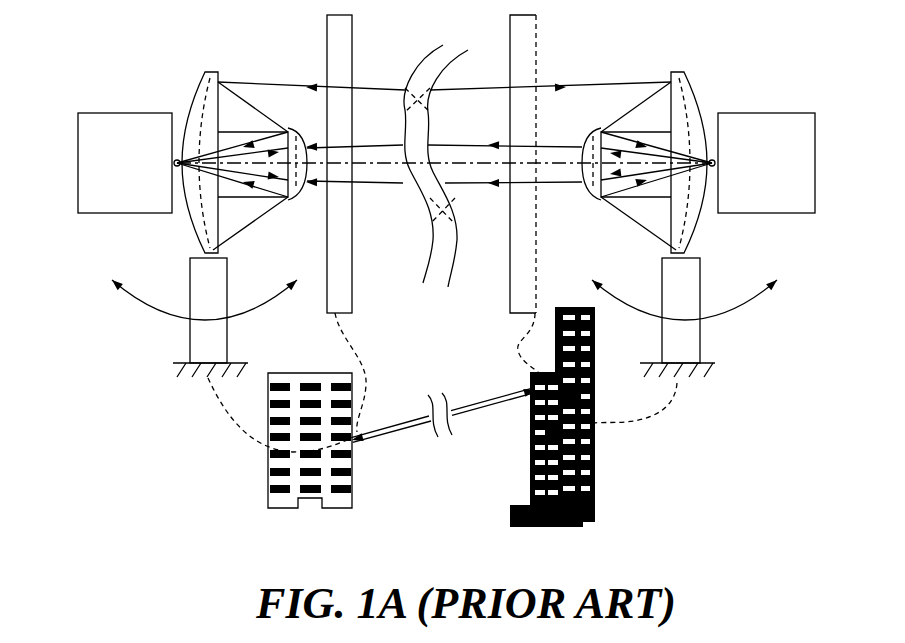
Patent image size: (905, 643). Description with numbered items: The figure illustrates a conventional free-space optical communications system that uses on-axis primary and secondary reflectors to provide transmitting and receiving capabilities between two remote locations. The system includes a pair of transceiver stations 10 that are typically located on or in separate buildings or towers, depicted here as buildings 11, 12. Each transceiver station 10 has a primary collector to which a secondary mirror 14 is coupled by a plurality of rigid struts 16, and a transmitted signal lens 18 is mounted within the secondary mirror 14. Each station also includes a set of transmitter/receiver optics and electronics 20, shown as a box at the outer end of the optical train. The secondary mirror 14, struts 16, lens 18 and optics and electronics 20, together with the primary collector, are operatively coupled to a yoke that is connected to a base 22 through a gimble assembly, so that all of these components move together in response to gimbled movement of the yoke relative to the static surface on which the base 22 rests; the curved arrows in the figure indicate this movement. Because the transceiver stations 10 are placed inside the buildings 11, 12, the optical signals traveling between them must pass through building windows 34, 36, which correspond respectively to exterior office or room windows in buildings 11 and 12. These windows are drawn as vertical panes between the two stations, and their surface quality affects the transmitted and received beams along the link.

The transceiver station 10 is at (141, 324).
The building 11 is at (328, 505).
The building 12 is at (207, 77).
The secondary mirror 14 is at (305, 128).
The rigid struts 16 is at (238, 128).
The transmitted signal lens 18 is at (297, 224).
The transmitter/receiver optics and electronics 20 is at (78, 163).
The base 22 is at (205, 338).
The building window 34 is at (343, 302).
The building window 36 is at (517, 308).